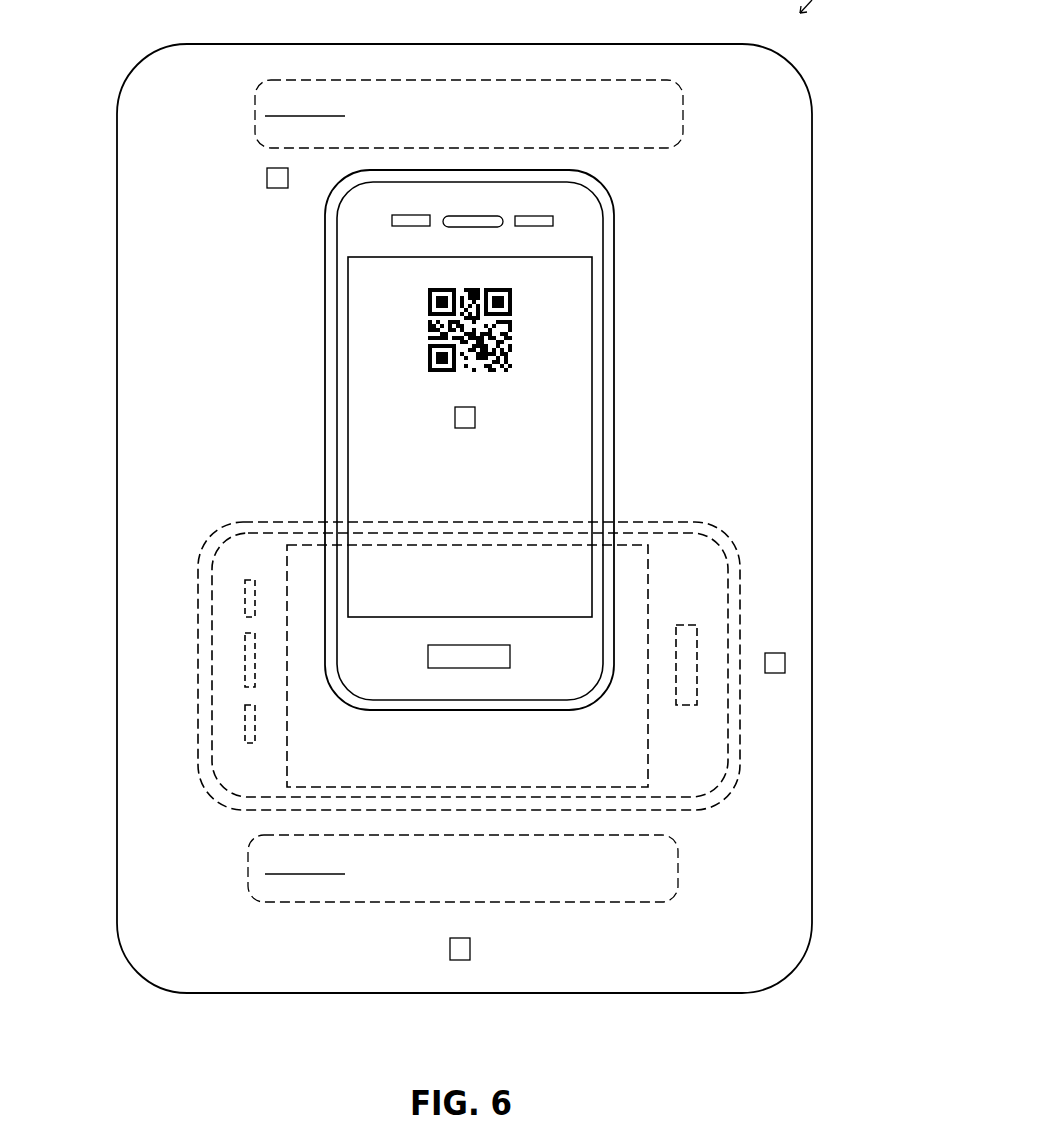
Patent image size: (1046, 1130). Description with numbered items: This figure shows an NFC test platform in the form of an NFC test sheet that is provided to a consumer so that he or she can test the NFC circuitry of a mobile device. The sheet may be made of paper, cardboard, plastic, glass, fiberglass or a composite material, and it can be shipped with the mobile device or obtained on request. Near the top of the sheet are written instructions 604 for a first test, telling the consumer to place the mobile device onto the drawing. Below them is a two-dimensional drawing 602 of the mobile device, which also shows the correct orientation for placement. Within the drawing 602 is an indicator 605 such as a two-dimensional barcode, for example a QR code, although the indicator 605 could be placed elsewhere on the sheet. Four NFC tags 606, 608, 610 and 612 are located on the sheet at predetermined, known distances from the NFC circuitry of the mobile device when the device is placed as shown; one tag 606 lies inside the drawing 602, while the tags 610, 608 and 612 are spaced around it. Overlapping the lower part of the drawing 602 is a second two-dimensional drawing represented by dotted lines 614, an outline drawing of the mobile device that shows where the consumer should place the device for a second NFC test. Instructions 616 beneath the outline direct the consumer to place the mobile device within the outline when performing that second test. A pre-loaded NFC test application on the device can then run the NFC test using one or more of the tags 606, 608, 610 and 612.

The two-dimensional drawing 602 is at (322, 258).
The written instructions 604 is at (663, 80).
The indicator 605 is at (412, 338).
The NFC tag 606 is at (478, 412).
The NFC tag 608 is at (785, 663).
The NFC tag 610 is at (267, 172).
The NFC tag 612 is at (462, 960).
The dotted line drawing 614 is at (200, 718).
The instructions 616 is at (657, 903).